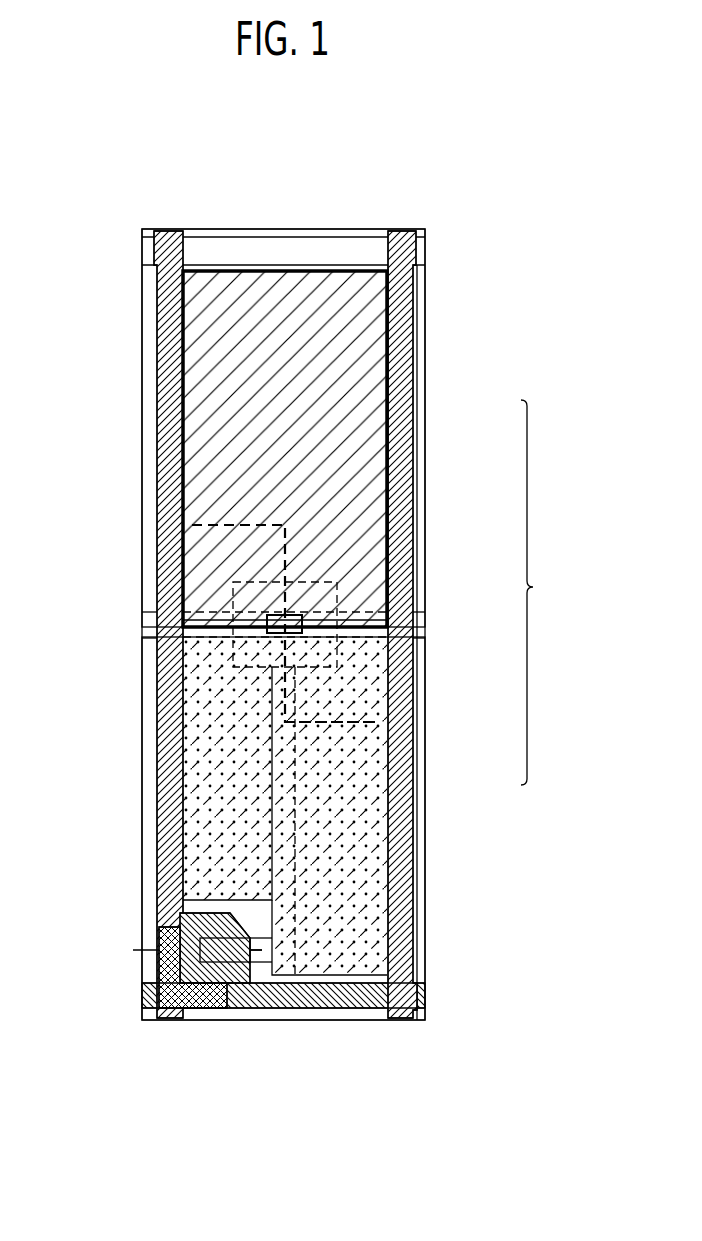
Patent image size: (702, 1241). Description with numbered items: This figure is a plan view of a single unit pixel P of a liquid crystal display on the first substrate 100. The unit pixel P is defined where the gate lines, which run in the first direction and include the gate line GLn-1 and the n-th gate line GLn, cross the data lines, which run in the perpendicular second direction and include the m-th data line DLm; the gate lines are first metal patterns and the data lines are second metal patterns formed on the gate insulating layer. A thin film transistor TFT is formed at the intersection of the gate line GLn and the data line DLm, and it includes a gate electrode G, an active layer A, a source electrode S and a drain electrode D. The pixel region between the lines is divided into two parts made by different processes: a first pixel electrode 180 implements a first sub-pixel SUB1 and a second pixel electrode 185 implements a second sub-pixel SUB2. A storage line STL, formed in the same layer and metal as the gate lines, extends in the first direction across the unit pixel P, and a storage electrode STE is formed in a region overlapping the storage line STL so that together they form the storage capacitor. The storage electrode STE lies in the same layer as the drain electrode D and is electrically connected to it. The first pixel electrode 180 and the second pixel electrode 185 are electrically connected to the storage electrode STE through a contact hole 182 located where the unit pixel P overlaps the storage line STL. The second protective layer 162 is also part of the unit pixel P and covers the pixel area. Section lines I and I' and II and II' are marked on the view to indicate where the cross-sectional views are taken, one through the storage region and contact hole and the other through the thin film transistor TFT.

The first substrate 100 is at (305, 174).
The gate line GLn-1 is at (423, 248).
The gate line GLn is at (425, 996).
The data line DLm is at (168, 295).
The first sub-pixel SUB1 is at (345, 419).
The second sub-pixel SUB2 is at (342, 770).
The first pixel electrode 180 is at (237, 437).
The contact hole 182 is at (272, 608).
The storage line STL is at (183, 622).
The storage electrode STE is at (338, 650).
The second pixel electrode 185 is at (230, 728).
The second protective layer 162 is at (237, 782).
The unit pixel P is at (537, 592).
The thin film transistor TFT is at (287, 1100).
The active layer A is at (160, 957).
The source electrode S is at (181, 990).
The drain electrode D is at (231, 968).
The gate electrode G is at (243, 982).
The section line I is at (283, 595).
The section line I' is at (330, 691).
The section line II is at (187, 923).
The section line II' is at (231, 921).